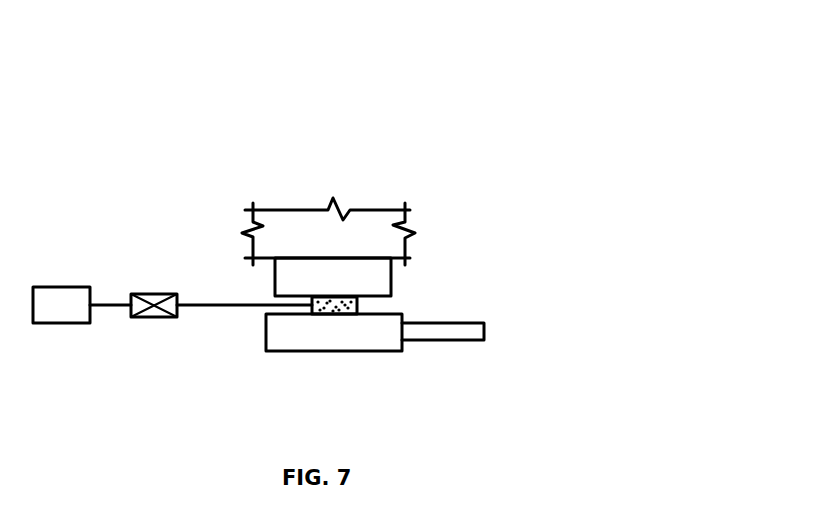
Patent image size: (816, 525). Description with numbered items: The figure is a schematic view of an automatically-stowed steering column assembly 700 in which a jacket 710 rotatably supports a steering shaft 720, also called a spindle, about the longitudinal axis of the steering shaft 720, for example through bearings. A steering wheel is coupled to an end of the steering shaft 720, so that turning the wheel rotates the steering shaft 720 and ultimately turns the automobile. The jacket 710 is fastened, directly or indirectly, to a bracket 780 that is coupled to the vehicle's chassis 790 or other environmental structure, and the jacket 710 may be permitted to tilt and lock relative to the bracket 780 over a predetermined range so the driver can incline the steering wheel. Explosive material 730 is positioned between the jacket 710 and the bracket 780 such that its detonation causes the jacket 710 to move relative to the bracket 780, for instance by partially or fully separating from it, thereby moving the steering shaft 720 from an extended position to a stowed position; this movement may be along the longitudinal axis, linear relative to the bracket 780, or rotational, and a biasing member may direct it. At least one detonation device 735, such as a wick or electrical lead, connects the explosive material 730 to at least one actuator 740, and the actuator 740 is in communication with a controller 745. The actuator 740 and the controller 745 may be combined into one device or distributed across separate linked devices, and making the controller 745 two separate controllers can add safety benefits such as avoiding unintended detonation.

The automatically-stowed steering column assembly 700 is at (374, 104).
The jacket 710 is at (288, 342).
The steering shaft 720 is at (462, 332).
The explosive material 730 is at (360, 305).
The detonation device 735 is at (222, 305).
The actuator 740 is at (158, 317).
The controller 745 is at (63, 300).
The bracket 780 is at (275, 285).
The chassis 790 is at (363, 227).